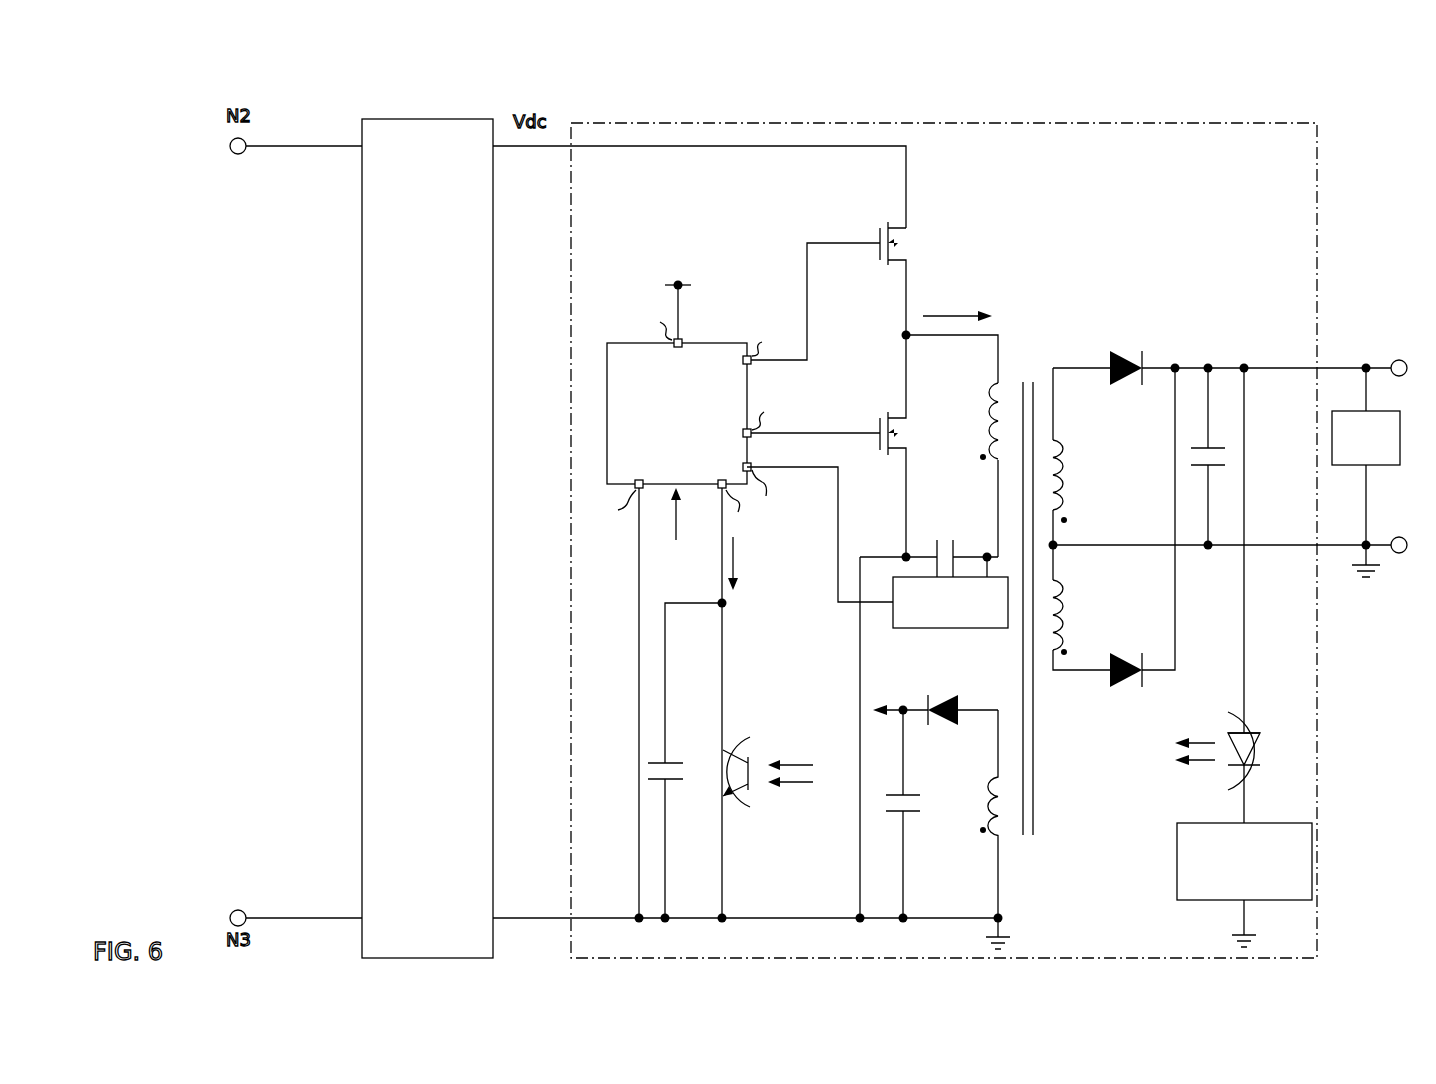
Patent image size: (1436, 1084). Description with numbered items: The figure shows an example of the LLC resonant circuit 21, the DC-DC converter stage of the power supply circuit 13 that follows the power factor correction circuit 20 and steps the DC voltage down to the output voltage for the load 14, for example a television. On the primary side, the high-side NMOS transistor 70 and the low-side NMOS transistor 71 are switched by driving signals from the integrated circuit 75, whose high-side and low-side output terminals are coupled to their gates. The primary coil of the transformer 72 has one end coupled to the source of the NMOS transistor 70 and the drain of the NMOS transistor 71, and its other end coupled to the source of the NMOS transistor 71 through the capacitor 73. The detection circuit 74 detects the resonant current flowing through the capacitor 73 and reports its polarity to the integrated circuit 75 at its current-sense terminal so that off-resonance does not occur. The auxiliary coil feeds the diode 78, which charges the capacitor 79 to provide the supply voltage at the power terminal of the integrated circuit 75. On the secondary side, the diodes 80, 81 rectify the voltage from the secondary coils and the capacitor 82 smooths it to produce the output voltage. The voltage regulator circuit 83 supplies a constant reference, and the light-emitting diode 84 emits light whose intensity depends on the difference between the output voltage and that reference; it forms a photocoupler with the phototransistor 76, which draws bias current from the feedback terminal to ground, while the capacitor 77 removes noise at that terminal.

The power supply circuit 13 is at (1303, 102).
The load 14 is at (1372, 466).
The power factor correction circuit 20 is at (440, 120).
The LLC resonant circuit 21 is at (948, 123).
The NMOS transistor 70 is at (882, 232).
The NMOS transistor 71 is at (884, 455).
The transformer 72 is at (1028, 370).
The capacitor 73 is at (936, 540).
The detection circuit 74 is at (975, 630).
The integrated circuit 75 is at (716, 344).
The phototransistor 76 is at (754, 813).
The capacitor 77 is at (674, 763).
The diode 78 is at (960, 698).
The capacitor 79 is at (892, 795).
The diode 80 is at (1115, 354).
The diode 81 is at (1115, 655).
The capacitor 82 is at (1206, 448).
The voltage regulator circuit 83 is at (1292, 824).
The light-emitting diode 84 is at (1252, 730).